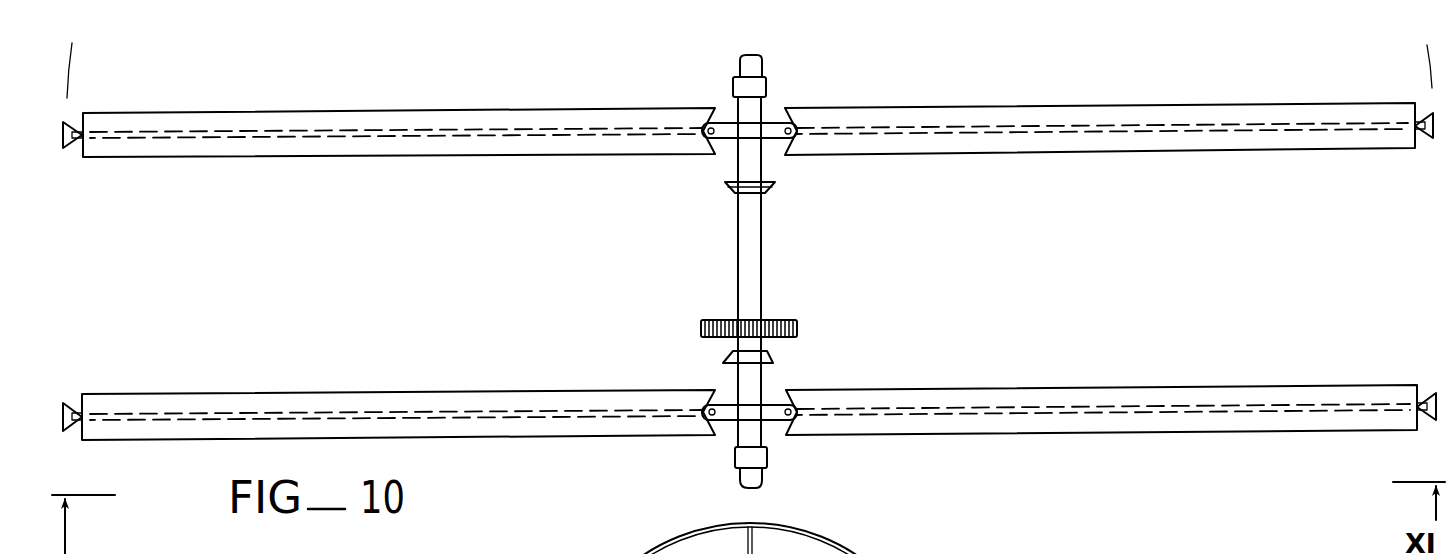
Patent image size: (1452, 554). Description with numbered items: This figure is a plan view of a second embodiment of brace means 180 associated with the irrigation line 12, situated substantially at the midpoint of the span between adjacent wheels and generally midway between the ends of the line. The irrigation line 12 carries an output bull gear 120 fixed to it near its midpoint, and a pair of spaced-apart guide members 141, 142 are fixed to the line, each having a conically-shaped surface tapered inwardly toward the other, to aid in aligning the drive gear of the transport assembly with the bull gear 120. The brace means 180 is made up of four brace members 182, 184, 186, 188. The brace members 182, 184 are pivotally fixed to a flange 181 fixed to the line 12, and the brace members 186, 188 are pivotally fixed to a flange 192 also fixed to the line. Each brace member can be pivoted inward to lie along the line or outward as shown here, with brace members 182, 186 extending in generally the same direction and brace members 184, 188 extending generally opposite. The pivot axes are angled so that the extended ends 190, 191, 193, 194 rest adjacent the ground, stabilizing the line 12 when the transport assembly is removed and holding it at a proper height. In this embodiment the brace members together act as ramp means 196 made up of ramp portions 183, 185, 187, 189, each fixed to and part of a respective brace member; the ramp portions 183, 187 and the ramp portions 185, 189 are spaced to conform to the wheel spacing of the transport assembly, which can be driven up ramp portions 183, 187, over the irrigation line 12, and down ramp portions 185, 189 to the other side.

The irrigation line 12 is at (738, 255).
The output bull gear 120 is at (785, 320).
The guide member 141 is at (776, 360).
The guide member 142 is at (777, 187).
The brace means 180 is at (389, 471).
The flange 181 is at (732, 422).
The brace member 182 is at (548, 440).
The ramp portion 183 is at (618, 423).
The brace member 184 is at (1100, 436).
The ramp portion 185 is at (1222, 420).
The brace member 186 is at (413, 157).
The ramp portion 187 is at (553, 140).
The brace member 188 is at (1070, 152).
The ramp portion 189 is at (1213, 138).
The extended end 190 is at (70, 432).
The extended end 191 is at (1425, 384).
The flange 192 is at (727, 140).
The extended end 193 is at (73, 143).
The extended end 194 is at (1428, 140).
The ramp means 196 is at (210, 444).